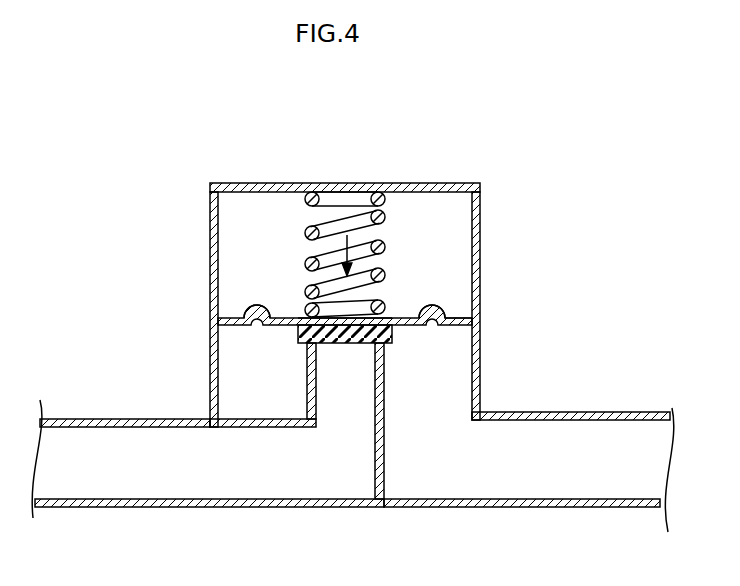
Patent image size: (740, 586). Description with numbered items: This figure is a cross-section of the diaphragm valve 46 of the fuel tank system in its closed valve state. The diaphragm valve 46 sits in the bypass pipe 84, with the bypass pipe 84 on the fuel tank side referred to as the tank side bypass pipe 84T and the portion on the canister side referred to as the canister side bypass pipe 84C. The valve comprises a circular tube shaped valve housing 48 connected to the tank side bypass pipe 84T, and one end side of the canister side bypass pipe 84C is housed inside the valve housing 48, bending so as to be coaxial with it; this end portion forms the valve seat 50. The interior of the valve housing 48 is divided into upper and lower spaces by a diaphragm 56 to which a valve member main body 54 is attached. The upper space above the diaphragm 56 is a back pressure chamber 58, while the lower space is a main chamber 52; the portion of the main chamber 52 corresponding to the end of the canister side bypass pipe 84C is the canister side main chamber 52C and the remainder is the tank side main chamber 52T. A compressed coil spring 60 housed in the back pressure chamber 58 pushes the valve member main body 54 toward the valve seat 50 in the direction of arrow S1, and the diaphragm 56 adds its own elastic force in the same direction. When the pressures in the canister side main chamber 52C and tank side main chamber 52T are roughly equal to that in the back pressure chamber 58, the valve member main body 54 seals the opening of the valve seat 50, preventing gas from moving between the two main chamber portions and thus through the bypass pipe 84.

The diaphragm valve 46 is at (452, 133).
The valve housing 48 is at (215, 368).
The valve seat 50 is at (306, 343).
The main chamber 52 is at (236, 362).
The canister side main chamber 52C is at (357, 367).
The tank side main chamber 52T is at (448, 372).
The valve member main body 54 is at (297, 330).
The diaphragm 56 is at (425, 308).
The back pressure chamber 58 is at (240, 232).
The compressed coil spring 60 is at (388, 212).
The arrow S1 direction S1 is at (318, 248).
The bypass pipe 84 is at (101, 405).
The canister side bypass pipe 84C is at (163, 507).
The tank side bypass pipe 84T is at (600, 508).